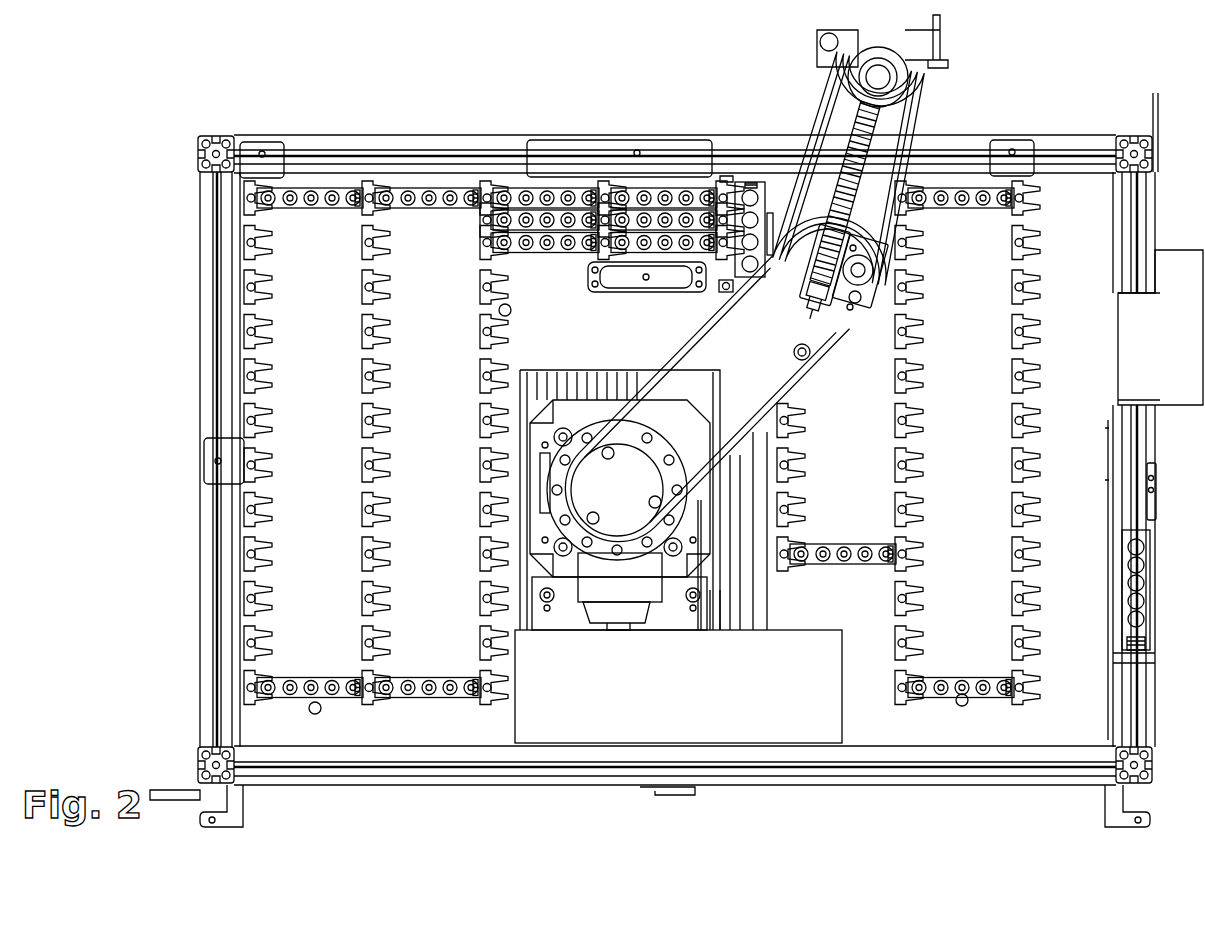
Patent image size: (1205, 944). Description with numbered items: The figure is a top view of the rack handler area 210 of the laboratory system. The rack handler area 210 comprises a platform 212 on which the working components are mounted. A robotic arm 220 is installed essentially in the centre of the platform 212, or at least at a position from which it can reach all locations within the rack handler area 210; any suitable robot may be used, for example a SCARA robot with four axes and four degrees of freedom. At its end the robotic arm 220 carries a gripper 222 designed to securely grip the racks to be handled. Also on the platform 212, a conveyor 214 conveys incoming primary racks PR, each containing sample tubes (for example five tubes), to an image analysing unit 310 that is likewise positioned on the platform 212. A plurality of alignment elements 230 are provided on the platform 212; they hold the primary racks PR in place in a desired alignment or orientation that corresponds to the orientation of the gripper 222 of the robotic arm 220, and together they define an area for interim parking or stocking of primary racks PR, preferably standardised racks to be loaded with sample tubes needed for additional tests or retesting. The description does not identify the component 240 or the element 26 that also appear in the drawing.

The rack handler area 210 is at (408, 116).
The platform 212 is at (1077, 180).
The conveyor 214 is at (727, 180).
The robotic arm 220 is at (802, 110).
The gripper 222 is at (832, 72).
The alignment elements 230 is at (363, 188).
The cartridge 240 is at (1115, 568).
The module housing 26 is at (1183, 250).
The image analysing unit 310 is at (735, 730).
The primary racks PR is at (437, 190).